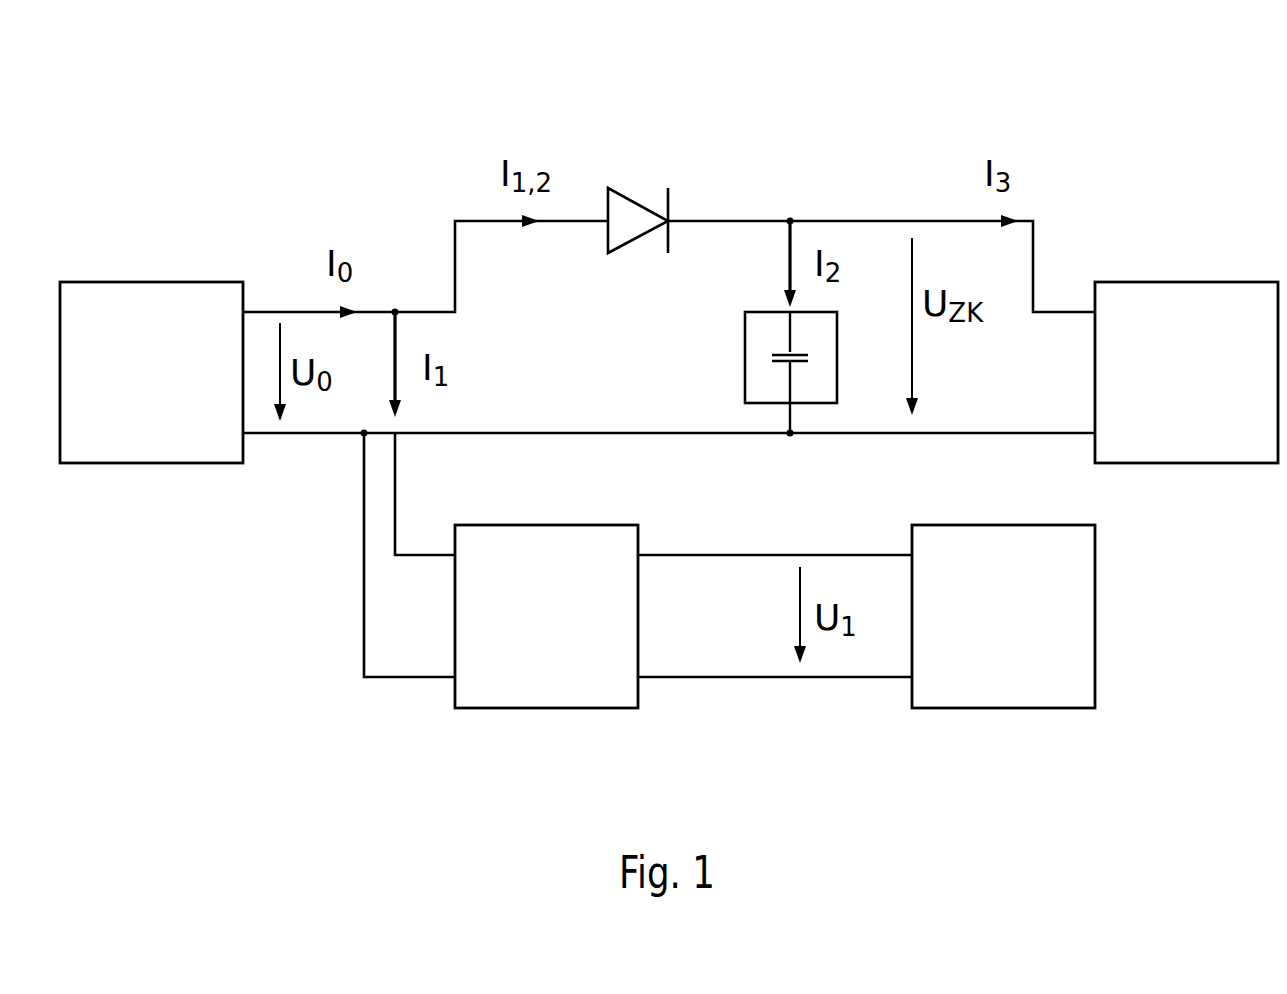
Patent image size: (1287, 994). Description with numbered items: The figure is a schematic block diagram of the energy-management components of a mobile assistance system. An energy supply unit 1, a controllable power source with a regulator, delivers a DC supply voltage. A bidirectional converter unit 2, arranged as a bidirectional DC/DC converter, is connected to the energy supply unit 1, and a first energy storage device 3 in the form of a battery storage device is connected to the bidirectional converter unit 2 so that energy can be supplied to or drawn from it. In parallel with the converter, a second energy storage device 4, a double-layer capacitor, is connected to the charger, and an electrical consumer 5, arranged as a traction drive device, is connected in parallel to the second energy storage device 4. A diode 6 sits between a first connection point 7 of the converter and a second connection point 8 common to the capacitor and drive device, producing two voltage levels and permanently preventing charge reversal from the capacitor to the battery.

The energy supply unit 1 is at (141, 391).
The bidirectional converter unit 2 is at (534, 636).
The first energy storage device 3 is at (990, 636).
The second energy storage device 4 is at (818, 385).
The electrical consumer 5 is at (1174, 391).
The diode 6 is at (641, 180).
The first connection point 7 is at (395, 292).
The second connection point 8 is at (799, 190).